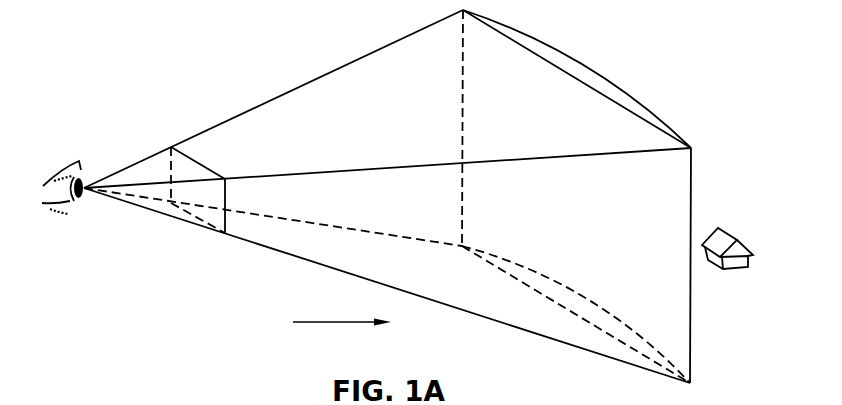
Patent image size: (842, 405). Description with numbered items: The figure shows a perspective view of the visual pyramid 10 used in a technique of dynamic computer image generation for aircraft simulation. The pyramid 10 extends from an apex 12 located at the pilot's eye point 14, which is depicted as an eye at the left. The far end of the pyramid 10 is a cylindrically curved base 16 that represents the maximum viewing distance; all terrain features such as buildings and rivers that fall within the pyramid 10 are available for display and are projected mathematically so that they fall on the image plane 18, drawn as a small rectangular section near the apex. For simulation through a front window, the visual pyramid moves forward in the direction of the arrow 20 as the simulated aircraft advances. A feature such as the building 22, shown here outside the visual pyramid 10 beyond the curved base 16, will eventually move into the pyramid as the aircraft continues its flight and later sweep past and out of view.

The pyramid 10 is at (314, 62).
The apex 12 is at (86, 179).
The pilot's eye point 14 is at (55, 213).
The cylindrically curved base 16 is at (680, 179).
The image plane 18 is at (178, 143).
The arrow 20 is at (327, 297).
The building 22 is at (733, 262).